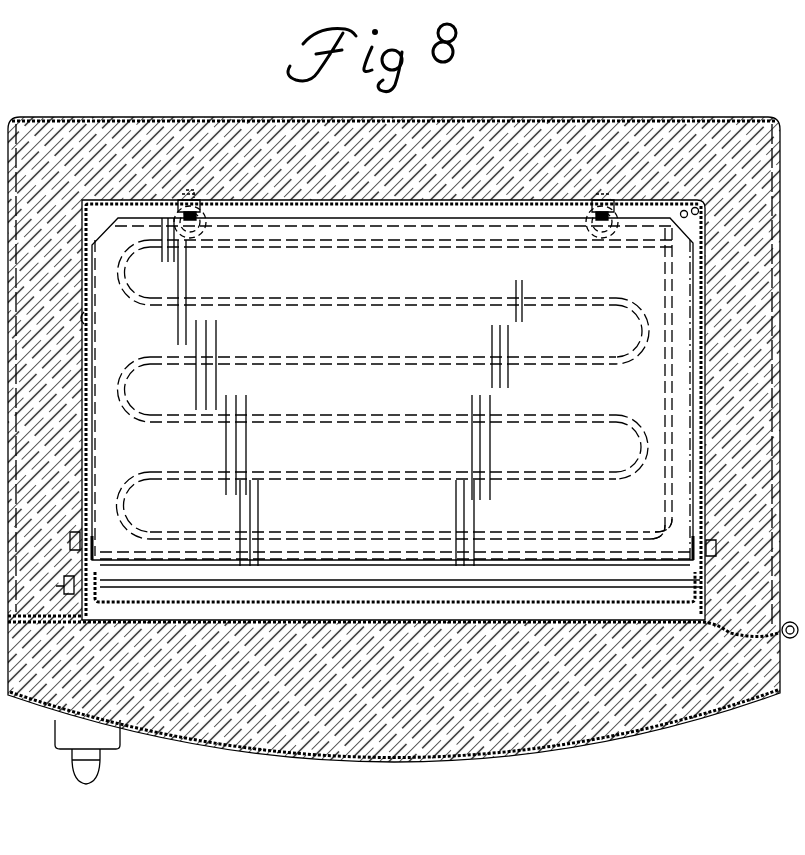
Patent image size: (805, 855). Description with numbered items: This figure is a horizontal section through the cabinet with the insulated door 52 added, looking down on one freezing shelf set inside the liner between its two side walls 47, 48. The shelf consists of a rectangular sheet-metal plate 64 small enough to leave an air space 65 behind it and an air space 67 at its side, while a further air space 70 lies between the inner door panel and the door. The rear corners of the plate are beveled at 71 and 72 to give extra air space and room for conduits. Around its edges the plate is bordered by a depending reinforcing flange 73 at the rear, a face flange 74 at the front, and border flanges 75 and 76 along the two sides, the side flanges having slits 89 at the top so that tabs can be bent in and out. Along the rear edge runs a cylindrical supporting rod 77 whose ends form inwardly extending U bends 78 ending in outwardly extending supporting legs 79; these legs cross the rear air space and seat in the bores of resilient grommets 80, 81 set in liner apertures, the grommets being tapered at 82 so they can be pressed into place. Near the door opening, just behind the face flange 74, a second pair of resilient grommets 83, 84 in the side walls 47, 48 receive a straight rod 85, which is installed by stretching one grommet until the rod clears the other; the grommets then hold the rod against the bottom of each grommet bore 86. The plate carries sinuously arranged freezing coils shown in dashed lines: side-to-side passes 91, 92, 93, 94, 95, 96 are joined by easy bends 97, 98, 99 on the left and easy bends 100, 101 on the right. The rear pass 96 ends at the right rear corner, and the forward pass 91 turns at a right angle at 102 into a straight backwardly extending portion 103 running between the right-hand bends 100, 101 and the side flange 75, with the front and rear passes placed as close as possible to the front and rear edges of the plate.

The side wall 47 is at (708, 430).
The side wall 48 is at (75, 398).
The insulated door 52 is at (308, 752).
The rectangular plate 64 is at (200, 577).
The air space 65 is at (488, 204).
The air space 67 is at (708, 360).
The air space 70 is at (285, 620).
The beveled rear corner 71 is at (702, 228).
The beveled rear corner 72 is at (112, 216).
The depending reinforcing flange 73 is at (388, 215).
The face flange 74 is at (298, 576).
The border flange 75 is at (692, 300).
The border flange 76 is at (97, 344).
The cylindrical supporting rod 77 is at (440, 232).
The U bend 78 is at (196, 238).
The supporting leg 79 is at (178, 206).
The grommet 80 is at (204, 224).
The grommet 81 is at (585, 222).
The tapered portion 82 is at (196, 196).
The resilient grommet 83 is at (718, 540).
The resilient grommet 84 is at (72, 530).
The straight rod 85 is at (493, 572).
The grommet bore 86 is at (66, 560).
The slit 89 is at (86, 320).
The forward pass 91 is at (374, 530).
The side to side pass 92 is at (380, 470).
The side to side pass 93 is at (376, 414).
The side to side pass 94 is at (376, 357).
The side to side pass 95 is at (375, 298).
The rear pass 96 is at (393, 250).
The easy bend 97 is at (122, 506).
The easy bend 98 is at (130, 384).
The easy bend 99 is at (124, 268).
The easy bend 100 is at (640, 447).
The easy bend 101 is at (640, 334).
The right-angle bend 102 is at (658, 520).
The straight backwardly extending portion 103 is at (664, 376).